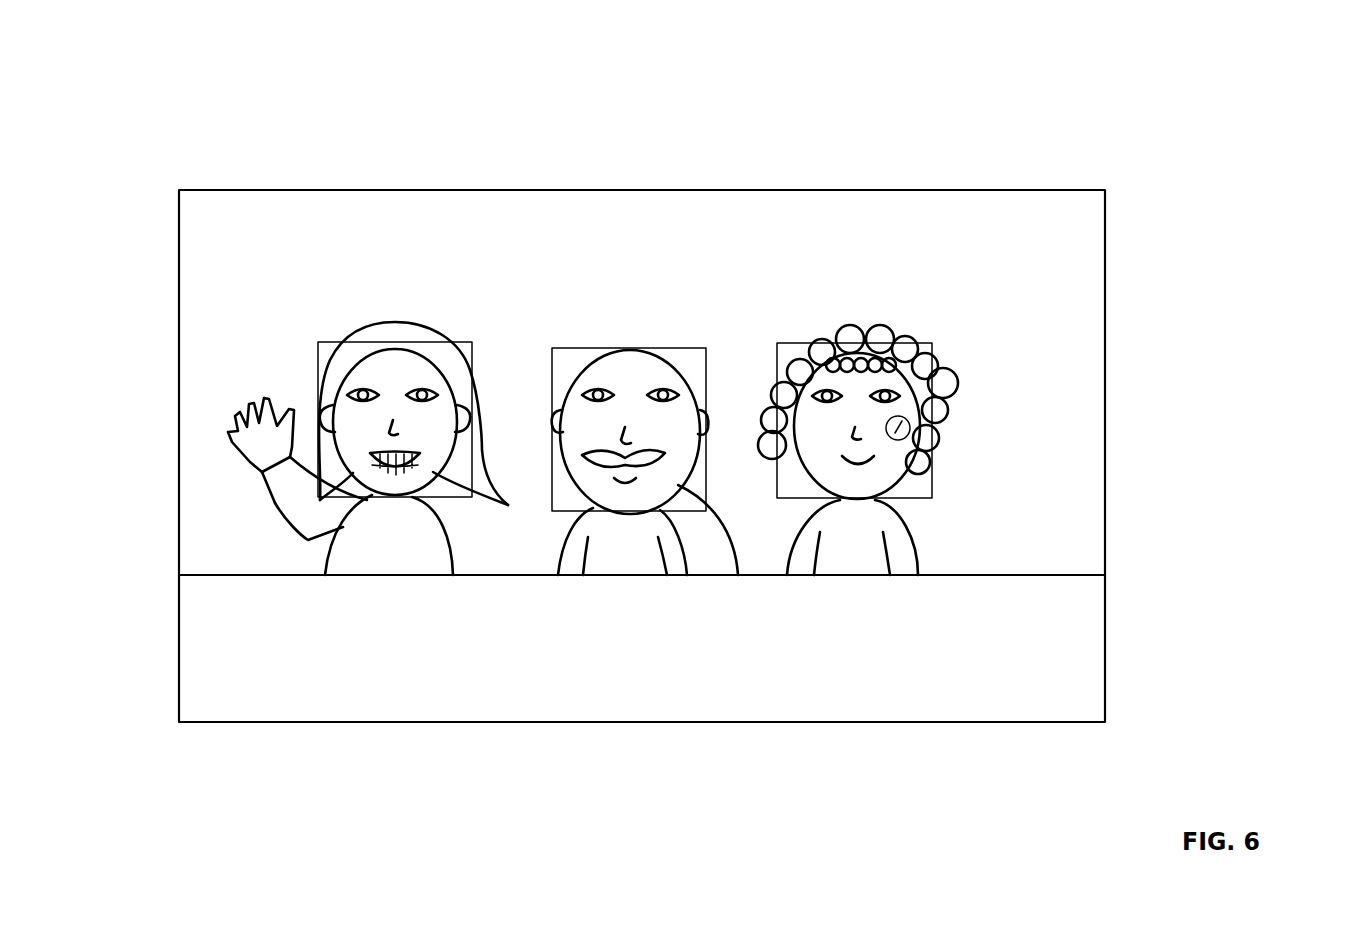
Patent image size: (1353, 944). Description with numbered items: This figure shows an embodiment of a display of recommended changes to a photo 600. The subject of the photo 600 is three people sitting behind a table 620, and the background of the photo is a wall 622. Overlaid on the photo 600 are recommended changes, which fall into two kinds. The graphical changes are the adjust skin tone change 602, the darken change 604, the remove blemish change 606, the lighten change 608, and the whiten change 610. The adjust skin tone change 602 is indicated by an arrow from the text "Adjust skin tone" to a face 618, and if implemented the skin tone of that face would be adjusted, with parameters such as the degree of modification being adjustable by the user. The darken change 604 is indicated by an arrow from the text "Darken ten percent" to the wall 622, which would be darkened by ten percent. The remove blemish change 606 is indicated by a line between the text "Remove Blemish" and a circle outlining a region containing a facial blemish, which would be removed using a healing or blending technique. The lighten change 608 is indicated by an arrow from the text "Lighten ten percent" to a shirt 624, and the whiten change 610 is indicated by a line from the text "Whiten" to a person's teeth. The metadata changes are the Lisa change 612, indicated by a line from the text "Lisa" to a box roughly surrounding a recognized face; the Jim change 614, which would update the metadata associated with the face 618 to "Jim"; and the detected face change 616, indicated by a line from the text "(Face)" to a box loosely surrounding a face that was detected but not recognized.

The photo 600 is at (1178, 44).
The adjust skin tone change 602 is at (880, 133).
The darken change 604 is at (1075, 238).
The remove blemish change 606 is at (912, 428).
The lighten change 608 is at (620, 560).
The whiten change 610 is at (400, 478).
The Lisa metadata change 612 is at (352, 275).
The Jim metadata change 614 is at (590, 282).
The detected face metadata change 616 is at (932, 485).
The face 618 is at (738, 575).
The table 620 is at (960, 712).
The wall 622 is at (195, 268).
The shirt 624 is at (560, 562).